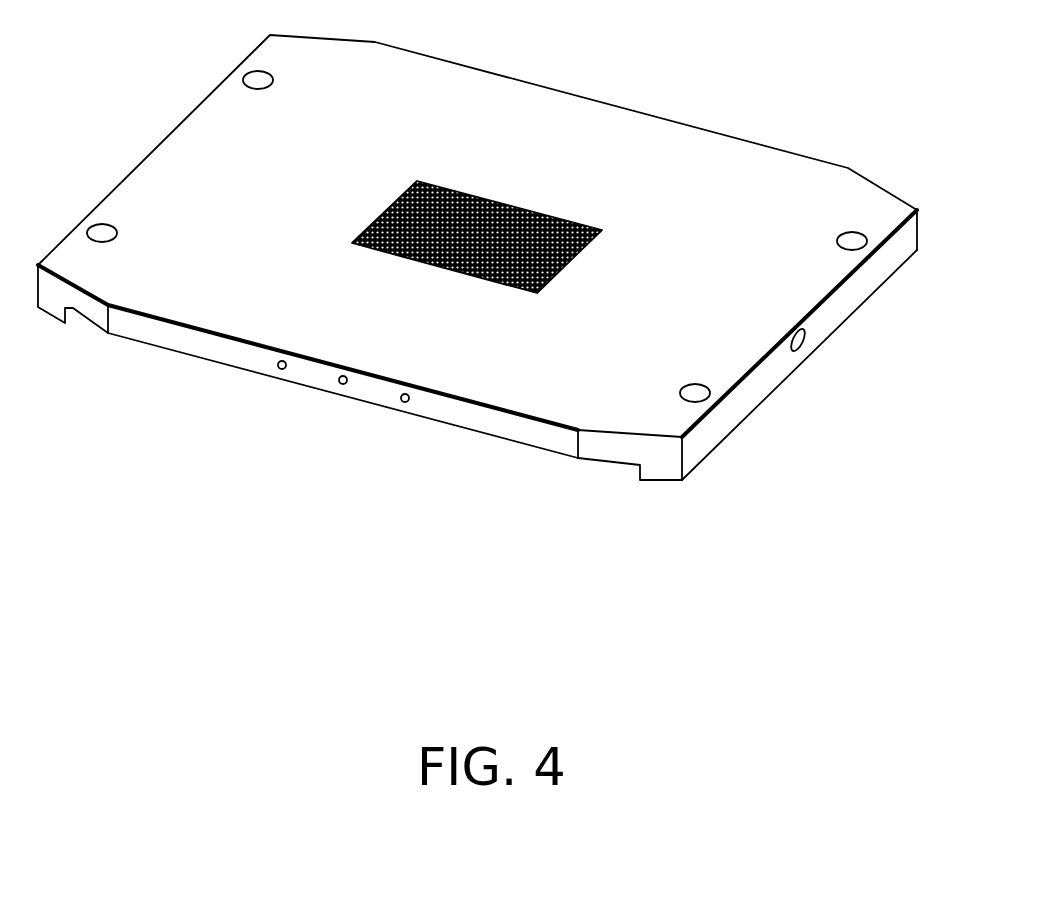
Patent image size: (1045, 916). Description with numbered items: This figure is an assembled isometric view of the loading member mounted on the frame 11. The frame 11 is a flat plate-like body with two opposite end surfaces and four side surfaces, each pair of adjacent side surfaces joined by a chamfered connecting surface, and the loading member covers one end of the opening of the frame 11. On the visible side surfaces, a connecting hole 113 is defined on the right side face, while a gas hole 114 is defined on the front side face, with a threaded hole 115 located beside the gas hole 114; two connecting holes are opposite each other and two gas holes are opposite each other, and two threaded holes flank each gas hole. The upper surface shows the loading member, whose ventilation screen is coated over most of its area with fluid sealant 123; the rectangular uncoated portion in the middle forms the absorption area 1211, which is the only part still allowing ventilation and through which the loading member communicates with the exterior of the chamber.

The frame 11 is at (663, 455).
The connecting hole 113 is at (803, 340).
The gas hole 114 is at (339, 383).
The threaded hole 115 is at (402, 401).
The fluid sealant 123 is at (653, 167).
The absorption area 1211 is at (480, 208).